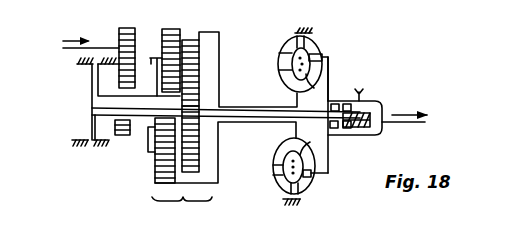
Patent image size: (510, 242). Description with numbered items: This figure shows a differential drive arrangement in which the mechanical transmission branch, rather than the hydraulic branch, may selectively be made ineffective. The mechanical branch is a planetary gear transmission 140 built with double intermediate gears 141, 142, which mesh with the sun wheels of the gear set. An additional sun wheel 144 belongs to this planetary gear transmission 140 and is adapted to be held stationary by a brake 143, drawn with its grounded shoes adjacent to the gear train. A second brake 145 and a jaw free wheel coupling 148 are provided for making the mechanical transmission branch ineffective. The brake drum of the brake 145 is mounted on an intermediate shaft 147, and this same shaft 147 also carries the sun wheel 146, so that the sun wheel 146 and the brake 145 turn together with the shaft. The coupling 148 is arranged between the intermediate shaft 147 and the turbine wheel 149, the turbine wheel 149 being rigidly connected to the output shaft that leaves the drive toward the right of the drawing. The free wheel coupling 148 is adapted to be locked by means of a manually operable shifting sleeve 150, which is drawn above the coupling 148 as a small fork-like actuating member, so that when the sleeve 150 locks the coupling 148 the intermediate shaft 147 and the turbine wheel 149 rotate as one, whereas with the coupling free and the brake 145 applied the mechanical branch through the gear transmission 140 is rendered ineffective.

The planetary gear transmission 140 is at (182, 209).
The double intermediate gear 141 is at (197, 43).
The double intermediate gear 142 is at (173, 47).
The brake 143 is at (112, 67).
The additional sun wheel 144 is at (163, 121).
The brake 145 is at (83, 139).
The sun wheel 146 is at (193, 98).
The intermediate shaft 147 is at (266, 113).
The jaw free wheel coupling 148 is at (368, 117).
The turbine wheel 149 is at (322, 57).
The manually operable shifting sleeve 150 is at (359, 92).